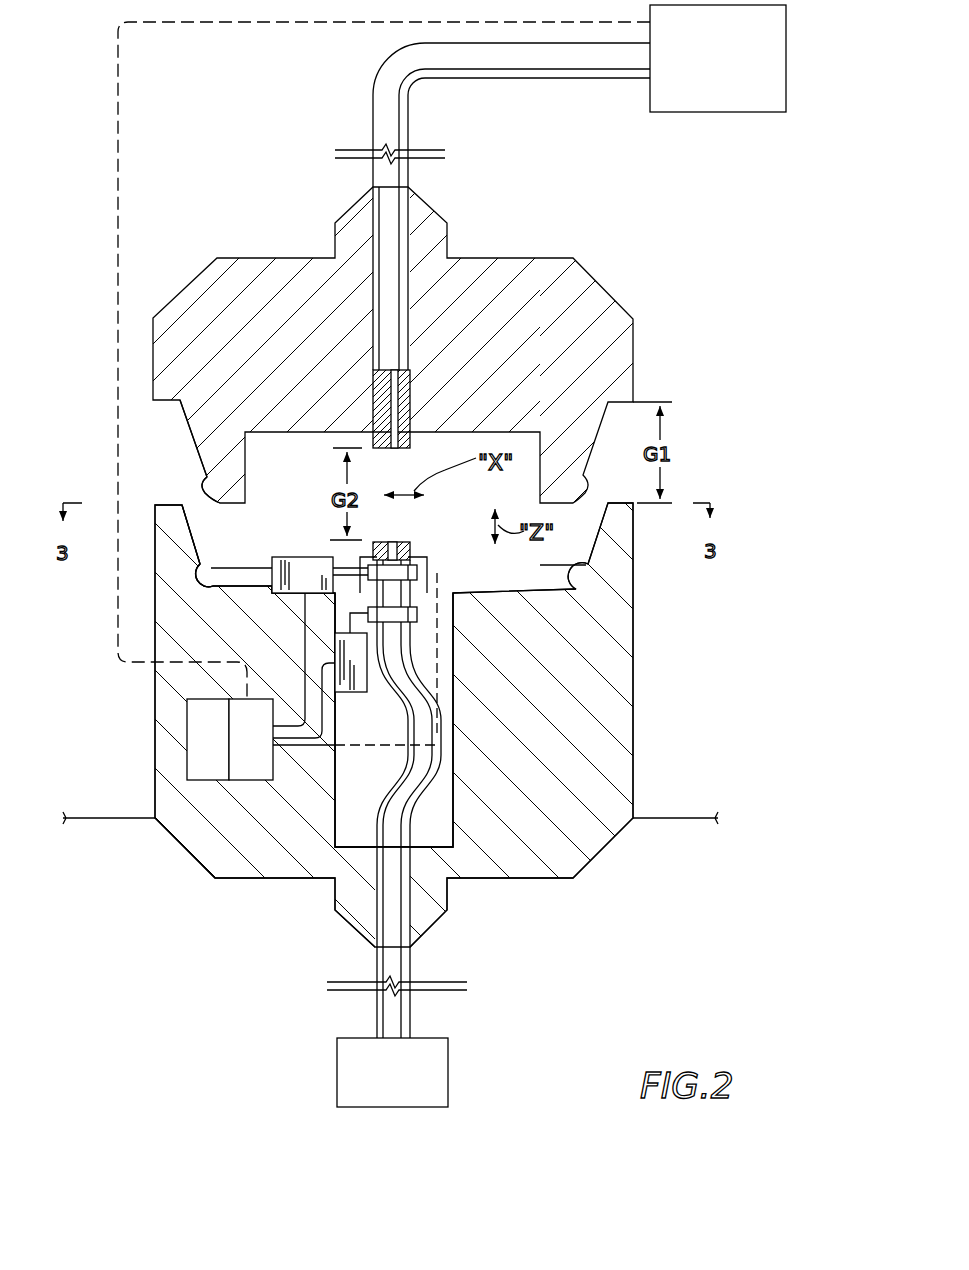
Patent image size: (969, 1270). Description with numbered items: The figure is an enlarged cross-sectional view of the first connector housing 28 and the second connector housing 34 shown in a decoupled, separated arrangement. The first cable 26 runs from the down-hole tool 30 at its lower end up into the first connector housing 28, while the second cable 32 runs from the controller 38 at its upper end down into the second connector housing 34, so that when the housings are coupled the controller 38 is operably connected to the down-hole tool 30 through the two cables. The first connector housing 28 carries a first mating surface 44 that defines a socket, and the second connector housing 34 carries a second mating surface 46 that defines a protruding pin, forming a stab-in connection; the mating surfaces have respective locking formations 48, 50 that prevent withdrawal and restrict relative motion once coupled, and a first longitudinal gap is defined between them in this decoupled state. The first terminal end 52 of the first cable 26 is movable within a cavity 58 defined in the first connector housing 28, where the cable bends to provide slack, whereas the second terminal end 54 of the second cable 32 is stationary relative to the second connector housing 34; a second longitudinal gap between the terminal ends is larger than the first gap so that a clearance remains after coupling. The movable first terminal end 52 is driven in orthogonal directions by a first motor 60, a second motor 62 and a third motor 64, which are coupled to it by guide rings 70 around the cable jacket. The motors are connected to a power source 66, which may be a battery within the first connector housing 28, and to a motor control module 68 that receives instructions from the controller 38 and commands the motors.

The first cable 26 is at (412, 1012).
The first connector housing 28 is at (635, 605).
The down-hole tool 30 is at (406, 1089).
The second cable 32 is at (524, 82).
The second connector housing 34 is at (604, 283).
The controller 38 is at (727, 79).
The first mating surface 44 is at (210, 572).
The second mating surface 46 is at (183, 440).
The locking formation 48 is at (210, 597).
The locking formation 50 is at (202, 480).
The first terminal end 52 is at (395, 542).
The second terminal end 54 is at (398, 451).
The cavity 58 is at (448, 661).
The first motor 60 is at (296, 556).
The second motor 62 is at (428, 562).
The third motor 64 is at (350, 692).
The power source 66 is at (220, 756).
The motor control module 68 is at (263, 756).
The guide rings 70 is at (418, 612).